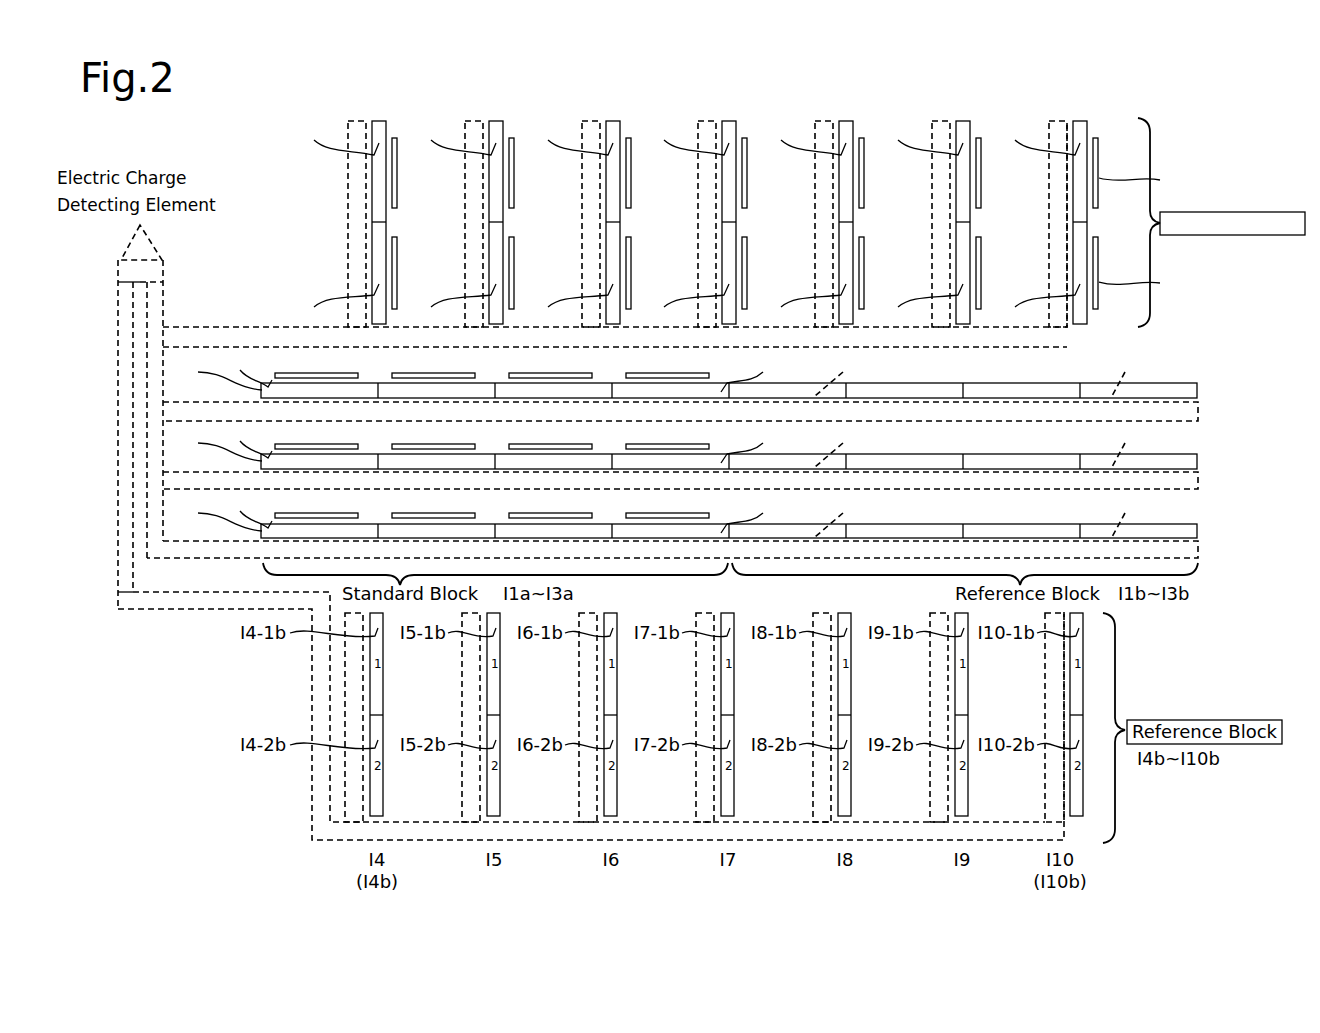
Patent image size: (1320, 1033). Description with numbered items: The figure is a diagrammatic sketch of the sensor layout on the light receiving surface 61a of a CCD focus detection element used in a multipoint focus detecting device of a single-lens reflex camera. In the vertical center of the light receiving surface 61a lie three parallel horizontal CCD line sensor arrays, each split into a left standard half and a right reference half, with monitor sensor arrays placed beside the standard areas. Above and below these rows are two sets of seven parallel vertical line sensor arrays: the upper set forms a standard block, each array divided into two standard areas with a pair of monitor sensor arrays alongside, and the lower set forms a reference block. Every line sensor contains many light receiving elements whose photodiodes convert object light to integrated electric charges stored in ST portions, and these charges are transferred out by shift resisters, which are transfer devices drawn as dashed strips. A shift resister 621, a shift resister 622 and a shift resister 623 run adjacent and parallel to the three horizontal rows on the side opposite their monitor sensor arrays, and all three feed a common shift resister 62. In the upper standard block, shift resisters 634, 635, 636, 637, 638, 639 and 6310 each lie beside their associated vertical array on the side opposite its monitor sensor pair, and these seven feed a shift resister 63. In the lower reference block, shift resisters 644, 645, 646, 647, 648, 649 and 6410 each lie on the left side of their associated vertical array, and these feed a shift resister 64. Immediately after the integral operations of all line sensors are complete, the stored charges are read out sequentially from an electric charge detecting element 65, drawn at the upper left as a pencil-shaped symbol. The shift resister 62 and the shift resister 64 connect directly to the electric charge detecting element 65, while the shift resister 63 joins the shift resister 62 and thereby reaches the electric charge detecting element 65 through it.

The light receiving surface 61a is at (689, 106).
The shift resister 62 is at (150, 440).
The shift resister 63 is at (230, 335).
The shift resister 64 is at (127, 342).
The electric charge detecting element 65 is at (138, 252).
The shift resister 621 is at (1198, 411).
The shift resister 622 is at (1198, 480).
The shift resister 623 is at (1198, 549).
The shift resister 634 is at (349, 225).
The shift resister 635 is at (466, 225).
The shift resister 636 is at (583, 225).
The shift resister 637 is at (699, 225).
The shift resister 638 is at (816, 225).
The shift resister 639 is at (933, 225).
The shift resister 6310 is at (1054, 225).
The shift resister 644 is at (353, 700).
The shift resister 645 is at (472, 700).
The shift resister 646 is at (589, 700).
The shift resister 647 is at (706, 700).
The shift resister 648 is at (823, 700).
The shift resister 649 is at (940, 700).
The shift resister 6410 is at (1056, 700).